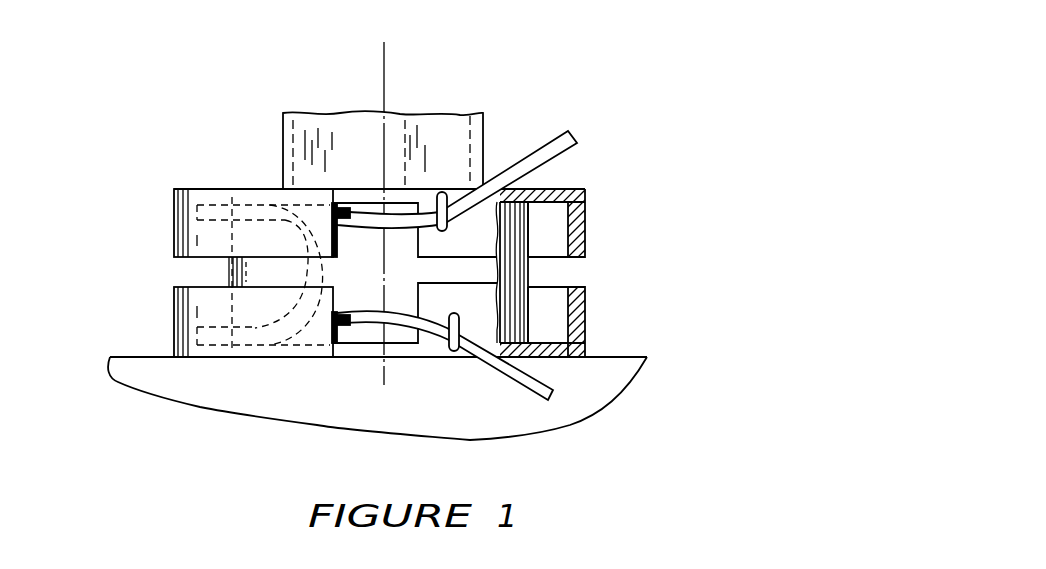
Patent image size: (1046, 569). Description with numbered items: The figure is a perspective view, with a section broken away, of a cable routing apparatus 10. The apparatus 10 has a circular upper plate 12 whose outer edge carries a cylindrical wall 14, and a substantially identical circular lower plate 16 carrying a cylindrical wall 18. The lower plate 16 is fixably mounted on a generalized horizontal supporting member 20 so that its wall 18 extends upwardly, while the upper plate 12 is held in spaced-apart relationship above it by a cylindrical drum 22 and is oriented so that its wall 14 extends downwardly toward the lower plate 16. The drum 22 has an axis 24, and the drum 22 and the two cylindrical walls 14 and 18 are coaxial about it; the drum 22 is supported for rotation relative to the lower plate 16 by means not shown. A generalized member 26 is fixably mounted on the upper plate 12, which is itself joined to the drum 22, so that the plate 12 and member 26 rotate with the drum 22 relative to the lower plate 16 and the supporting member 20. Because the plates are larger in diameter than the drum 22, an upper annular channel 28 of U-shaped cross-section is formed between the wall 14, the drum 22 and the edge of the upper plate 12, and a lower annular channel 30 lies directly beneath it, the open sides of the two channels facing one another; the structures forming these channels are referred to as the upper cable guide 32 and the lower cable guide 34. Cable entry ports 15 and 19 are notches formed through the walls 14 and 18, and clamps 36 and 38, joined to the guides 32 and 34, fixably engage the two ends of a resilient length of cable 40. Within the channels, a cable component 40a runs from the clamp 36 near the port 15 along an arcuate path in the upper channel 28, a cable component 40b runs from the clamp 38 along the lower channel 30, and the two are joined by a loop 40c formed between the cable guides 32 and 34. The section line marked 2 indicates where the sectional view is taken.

The cable routing apparatus 10 is at (150, 228).
The upper plate 12 is at (548, 177).
The cylindrical wall 14 is at (577, 215).
The cable entry port 15 is at (357, 243).
The lower plate 16 is at (565, 350).
The cylindrical wall 18 is at (571, 321).
The cable entry port 19 is at (368, 335).
The horizontal supporting member 20 is at (606, 377).
The cylindrical drum 22 is at (229, 266).
The axis 24 is at (384, 55).
The generalized member 26 is at (463, 115).
The upper annular channel 28 is at (553, 217).
The lower annular channel 30 is at (545, 303).
The upper cable guide 32 is at (188, 188).
The lower cable guide 34 is at (175, 305).
The clamp 36 is at (442, 192).
The clamp 38 is at (448, 352).
The cable 40 is at (538, 383).
The cable component 40a is at (235, 197).
The cable component 40b is at (300, 345).
The loop 40c is at (247, 343).
The section line 2- 2 is at (103, 147).